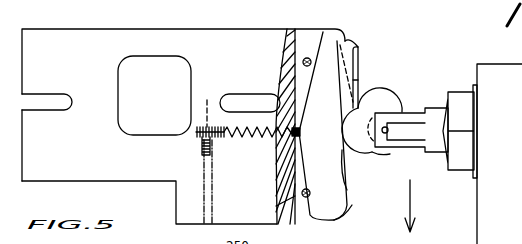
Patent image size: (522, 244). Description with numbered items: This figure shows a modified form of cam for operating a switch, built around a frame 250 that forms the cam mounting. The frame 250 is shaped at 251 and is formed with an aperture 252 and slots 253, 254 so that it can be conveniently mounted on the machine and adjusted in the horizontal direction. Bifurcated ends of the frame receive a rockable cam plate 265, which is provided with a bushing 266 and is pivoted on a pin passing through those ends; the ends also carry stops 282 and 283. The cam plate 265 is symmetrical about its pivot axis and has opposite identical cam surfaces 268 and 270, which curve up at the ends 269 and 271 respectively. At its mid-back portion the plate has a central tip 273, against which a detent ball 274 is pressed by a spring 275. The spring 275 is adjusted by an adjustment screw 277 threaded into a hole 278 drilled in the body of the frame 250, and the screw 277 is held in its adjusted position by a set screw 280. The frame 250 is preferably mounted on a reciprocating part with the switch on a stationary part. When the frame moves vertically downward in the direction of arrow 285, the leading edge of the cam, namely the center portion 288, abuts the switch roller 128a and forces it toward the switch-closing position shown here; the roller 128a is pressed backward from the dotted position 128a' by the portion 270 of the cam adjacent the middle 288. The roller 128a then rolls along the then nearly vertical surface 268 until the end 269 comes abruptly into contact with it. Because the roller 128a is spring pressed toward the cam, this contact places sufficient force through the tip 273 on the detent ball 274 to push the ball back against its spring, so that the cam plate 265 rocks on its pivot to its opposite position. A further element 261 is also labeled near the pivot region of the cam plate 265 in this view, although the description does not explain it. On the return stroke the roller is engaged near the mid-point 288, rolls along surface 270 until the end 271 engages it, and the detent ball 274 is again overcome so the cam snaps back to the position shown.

The frame 250 is at (239, 41).
The shaped portion of frame 251 is at (143, 180).
The aperture 252 is at (118, 113).
The slot 253 is at (254, 78).
The slot 254 is at (57, 95).
The adjustment screw 277 is at (208, 104).
The set screw 280 is at (203, 151).
The hole 278 is at (237, 138).
The spring 275 is at (262, 138).
The detent ball 274 is at (299, 134).
The stop 282 is at (308, 58).
The stop 283 is at (308, 197).
The central tip 273 is at (304, 122).
The cam surface 270 is at (347, 188).
The curved end 271 is at (348, 212).
The rockable cam plate 265 is at (366, 51).
The curved end 269 is at (359, 56).
The cam surface 268 is at (358, 83).
The hub 261 is at (357, 97).
The bushing 266 is at (356, 160).
The dotted position of roller 128a' is at (411, 116).
The roller 128a is at (461, 154).
The center portion 288 is at (373, 158).
The arrow 285 is at (422, 206).